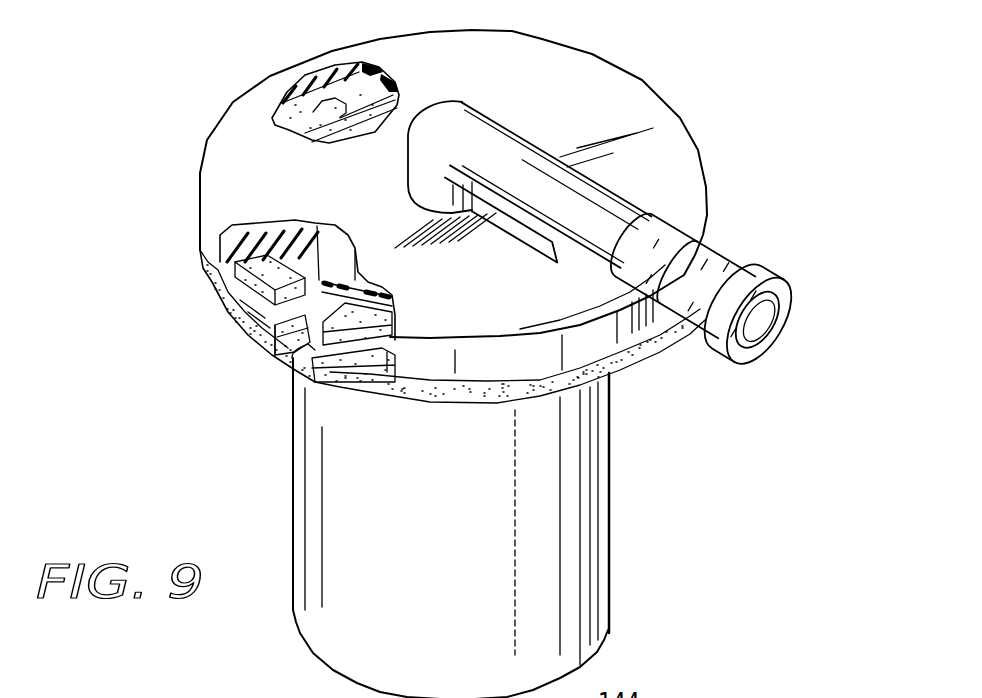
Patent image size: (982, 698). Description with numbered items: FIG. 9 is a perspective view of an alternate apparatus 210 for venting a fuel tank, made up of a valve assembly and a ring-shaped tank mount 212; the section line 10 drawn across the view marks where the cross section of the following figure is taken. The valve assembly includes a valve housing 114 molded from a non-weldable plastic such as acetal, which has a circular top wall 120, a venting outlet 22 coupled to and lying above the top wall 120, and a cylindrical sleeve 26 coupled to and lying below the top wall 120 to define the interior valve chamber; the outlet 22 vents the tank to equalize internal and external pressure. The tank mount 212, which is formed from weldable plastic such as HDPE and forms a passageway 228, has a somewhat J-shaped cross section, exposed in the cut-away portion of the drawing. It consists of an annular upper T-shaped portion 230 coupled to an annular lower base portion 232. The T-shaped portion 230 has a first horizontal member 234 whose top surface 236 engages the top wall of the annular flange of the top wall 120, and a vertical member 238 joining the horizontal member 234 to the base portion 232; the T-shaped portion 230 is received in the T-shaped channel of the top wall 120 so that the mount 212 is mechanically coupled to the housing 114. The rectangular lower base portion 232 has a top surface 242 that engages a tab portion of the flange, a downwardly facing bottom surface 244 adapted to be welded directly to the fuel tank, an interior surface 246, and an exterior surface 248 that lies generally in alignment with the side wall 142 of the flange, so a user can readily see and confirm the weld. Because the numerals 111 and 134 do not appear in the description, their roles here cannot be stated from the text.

The apparatus 10 is at (246, 19).
The venting outlet 22 is at (631, 185).
The cylindrical sleeve 26 is at (330, 587).
The container 111 is at (652, 487).
The valve housing 114 is at (615, 557).
The top wall 120 is at (583, 83).
The locking lug 134 is at (347, 110).
The side wall 142 is at (627, 335).
The apparatus 210 is at (757, 93).
The tank mount 212 is at (208, 315).
The passageway 228 is at (324, 265).
The upper T-shaped portion 230 is at (248, 292).
The lower base portion 232 is at (250, 367).
The first horizontal member 234 is at (360, 353).
The top surface 236 is at (258, 265).
The vertical member 238 is at (303, 323).
The top surface 242 is at (323, 350).
The bottom surface 244 is at (285, 357).
The interior surface 246 is at (308, 343).
The exterior surface 248 is at (487, 403).